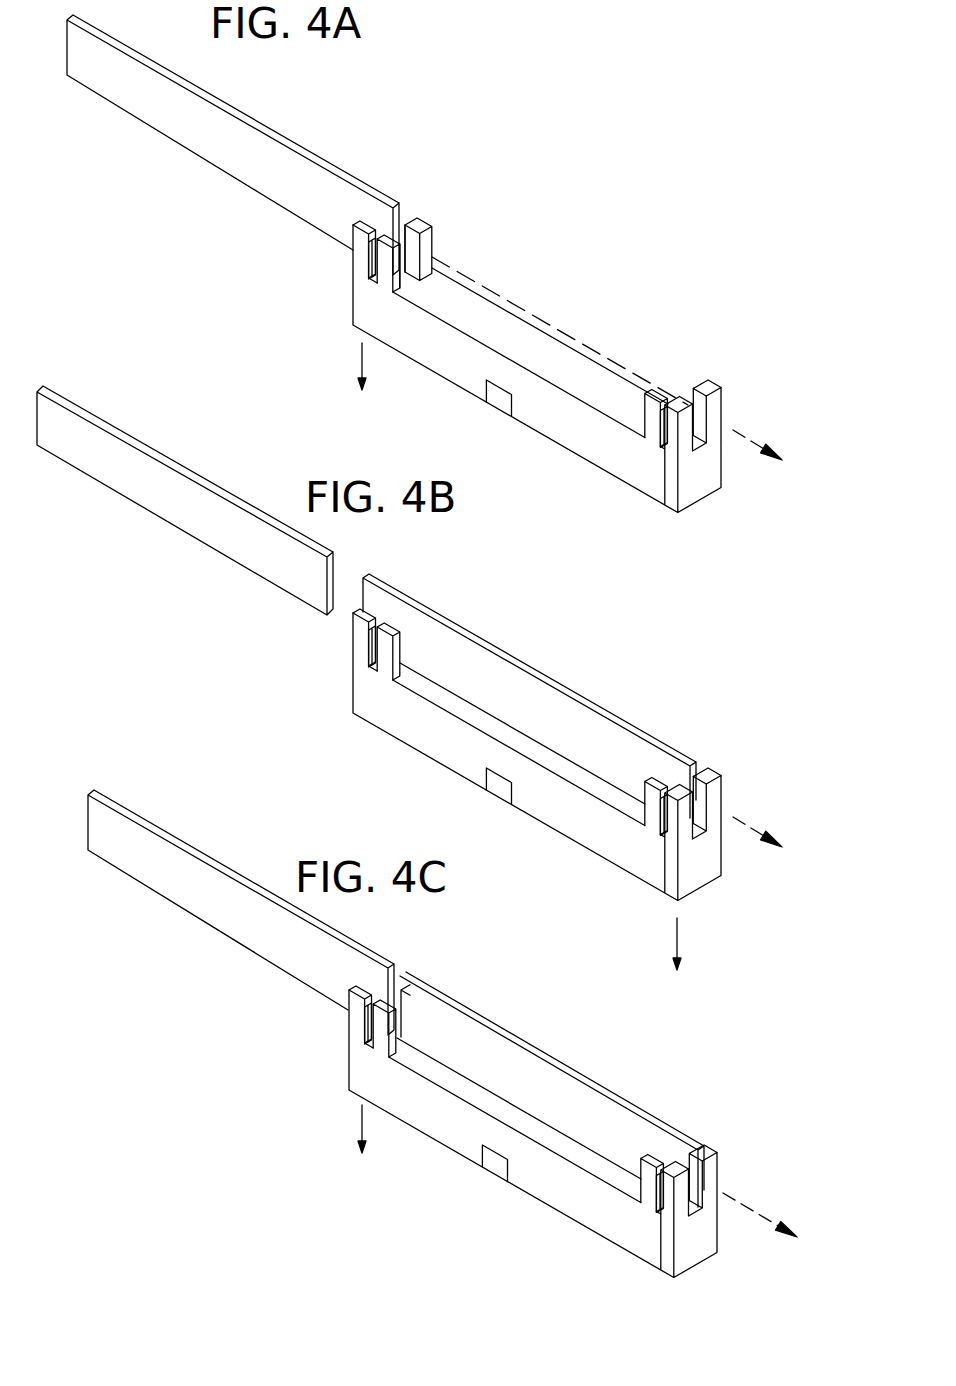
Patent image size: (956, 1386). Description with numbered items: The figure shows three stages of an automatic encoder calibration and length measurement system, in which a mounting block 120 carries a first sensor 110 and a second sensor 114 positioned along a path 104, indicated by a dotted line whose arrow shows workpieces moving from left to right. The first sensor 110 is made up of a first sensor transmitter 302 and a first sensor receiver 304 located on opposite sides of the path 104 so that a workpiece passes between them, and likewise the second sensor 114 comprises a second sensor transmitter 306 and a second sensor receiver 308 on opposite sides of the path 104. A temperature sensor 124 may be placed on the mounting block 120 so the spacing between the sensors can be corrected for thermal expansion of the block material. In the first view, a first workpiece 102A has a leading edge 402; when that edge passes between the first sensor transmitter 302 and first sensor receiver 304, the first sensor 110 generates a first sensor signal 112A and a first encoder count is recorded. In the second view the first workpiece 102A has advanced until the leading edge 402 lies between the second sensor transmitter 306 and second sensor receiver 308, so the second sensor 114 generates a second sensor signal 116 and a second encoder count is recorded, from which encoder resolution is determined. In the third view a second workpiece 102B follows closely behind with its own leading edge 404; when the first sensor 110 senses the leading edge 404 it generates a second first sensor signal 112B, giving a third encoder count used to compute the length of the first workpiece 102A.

In FIG. 4A, the first workpiece 102A is at (268, 127).
In FIG. 4B, the first workpiece 102A is at (585, 700).
In FIG. 4C, the first workpiece 102A is at (545, 1047).
In FIG. 4A, the second workpiece 102B is at (172, 458).
In FIG. 4C, the second workpiece 102B is at (205, 862).
In FIG. 4A, the path 104 is at (738, 432).
In FIG. 4B, the path 104 is at (738, 819).
In FIG. 4C, the path 104 is at (728, 1194).
In FIG. 4A, the first sensor 110 is at (369, 239).
In FIG. 4B, the first sensor 110 is at (369, 628).
In FIG. 4C, the first sensor 110 is at (365, 1005).
In FIG. 4A, the first sensor signal 112A is at (367, 385).
In FIG. 4C, the second first sensor signal 112B is at (367, 1152).
In FIG. 4A, the second sensor 114 is at (662, 445).
In FIG. 4B, the second sensor 114 is at (660, 835).
In FIG. 4C, the second sensor 114 is at (655, 1212).
In FIG. 4B, the second sensor signal 116 is at (668, 962).
In FIG. 4A, the mounting block 120 is at (703, 505).
In FIG. 4B, the mounting block 120 is at (430, 762).
In FIG. 4C, the mounting block 120 is at (560, 1208).
In FIG. 4A, the temperature sensor 124 is at (497, 405).
In FIG. 4B, the temperature sensor 124 is at (498, 786).
In FIG. 4C, the temperature sensor 124 is at (494, 1168).
In FIG. 4A, the first sensor transmitter 302 is at (367, 255).
In FIG. 4B, the first sensor transmitter 302 is at (367, 645).
In FIG. 4C, the first sensor transmitter 302 is at (363, 1022).
In FIG. 4A, the first sensor receiver 304 is at (414, 222).
In FIG. 4A, the second sensor transmitter 306 is at (663, 452).
In FIG. 4B, the second sensor transmitter 306 is at (663, 840).
In FIG. 4C, the second sensor transmitter 306 is at (658, 1218).
In FIG. 4A, the second sensor receiver 308 is at (703, 380).
In FIG. 4B, the second sensor receiver 308 is at (704, 773).
In FIG. 4A, the leading edge 402 is at (402, 212).
In FIG. 4B, the leading edge 402 is at (718, 784).
In FIG. 4C, the leading edge 402 is at (714, 1162).
In FIG. 4B, the leading edge 404 is at (367, 574).
In FIG. 4C, the leading edge 404 is at (398, 975).